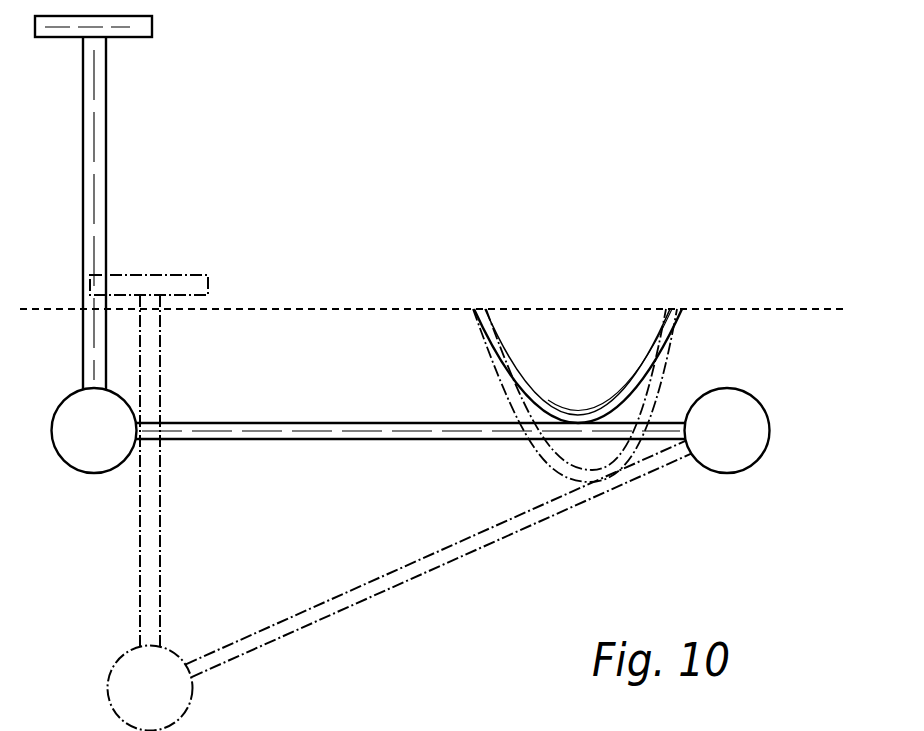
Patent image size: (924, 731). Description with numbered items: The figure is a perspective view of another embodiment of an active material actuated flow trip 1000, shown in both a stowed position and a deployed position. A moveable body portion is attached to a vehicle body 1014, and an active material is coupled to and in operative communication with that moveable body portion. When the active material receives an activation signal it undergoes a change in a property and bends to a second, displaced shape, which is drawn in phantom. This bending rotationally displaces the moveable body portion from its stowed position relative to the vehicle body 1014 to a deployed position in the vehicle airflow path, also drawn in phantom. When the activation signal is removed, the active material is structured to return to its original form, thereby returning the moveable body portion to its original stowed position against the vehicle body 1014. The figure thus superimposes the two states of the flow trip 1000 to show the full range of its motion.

The flow trip 1000 is at (615, 105).
The vehicle body 1014 is at (747, 309).